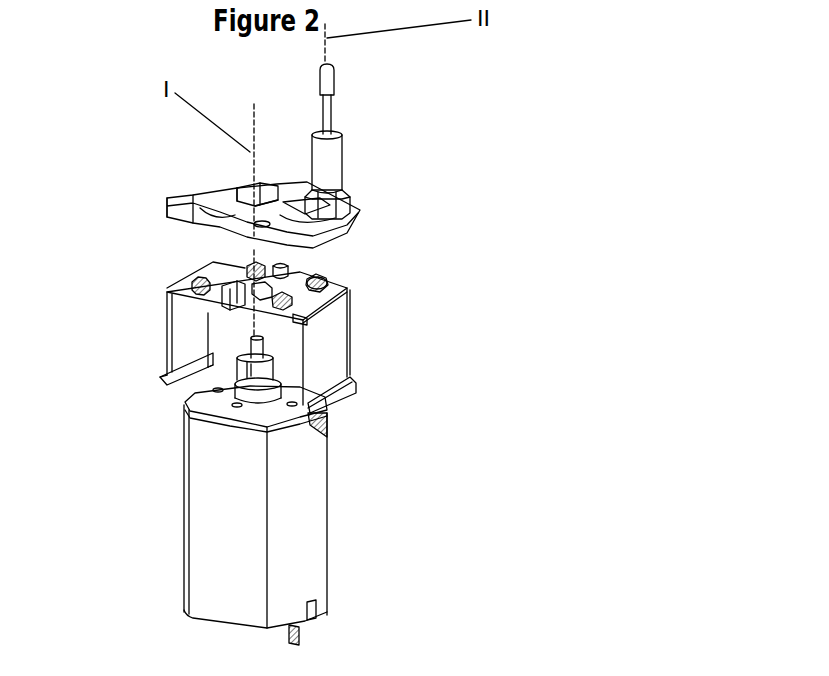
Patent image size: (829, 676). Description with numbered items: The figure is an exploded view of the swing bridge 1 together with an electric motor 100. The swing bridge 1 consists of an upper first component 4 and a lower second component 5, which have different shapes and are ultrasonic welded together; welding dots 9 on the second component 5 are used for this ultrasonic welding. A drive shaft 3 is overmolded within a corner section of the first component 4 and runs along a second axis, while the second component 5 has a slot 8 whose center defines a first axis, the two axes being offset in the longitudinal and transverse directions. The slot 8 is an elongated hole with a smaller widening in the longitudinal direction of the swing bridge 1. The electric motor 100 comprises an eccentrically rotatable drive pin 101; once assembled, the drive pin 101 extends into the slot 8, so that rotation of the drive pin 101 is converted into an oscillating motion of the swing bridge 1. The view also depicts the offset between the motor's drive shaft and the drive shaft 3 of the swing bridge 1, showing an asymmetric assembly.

The swing bridge 1 is at (135, 206).
The drive shaft 3 is at (327, 108).
The first component 4 is at (362, 219).
The second component 5 is at (313, 298).
The slot 8 is at (260, 290).
The welding dots 9 is at (325, 280).
The electric motor 100 is at (235, 493).
The drive pin 101 is at (243, 360).